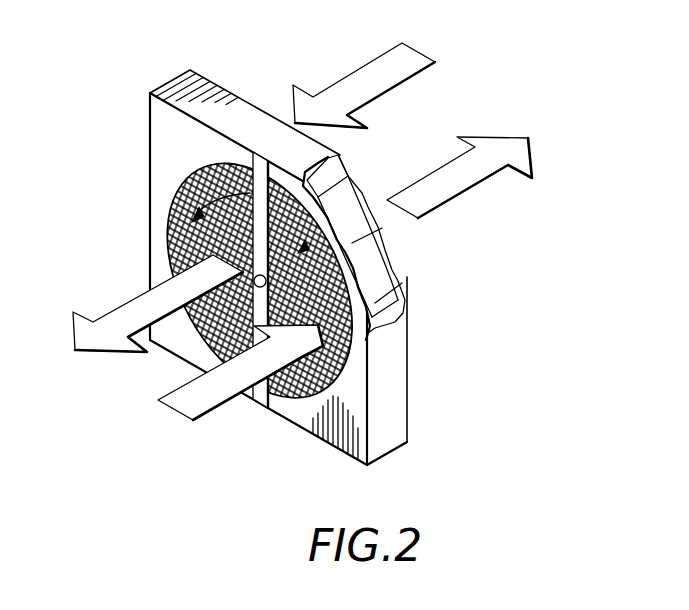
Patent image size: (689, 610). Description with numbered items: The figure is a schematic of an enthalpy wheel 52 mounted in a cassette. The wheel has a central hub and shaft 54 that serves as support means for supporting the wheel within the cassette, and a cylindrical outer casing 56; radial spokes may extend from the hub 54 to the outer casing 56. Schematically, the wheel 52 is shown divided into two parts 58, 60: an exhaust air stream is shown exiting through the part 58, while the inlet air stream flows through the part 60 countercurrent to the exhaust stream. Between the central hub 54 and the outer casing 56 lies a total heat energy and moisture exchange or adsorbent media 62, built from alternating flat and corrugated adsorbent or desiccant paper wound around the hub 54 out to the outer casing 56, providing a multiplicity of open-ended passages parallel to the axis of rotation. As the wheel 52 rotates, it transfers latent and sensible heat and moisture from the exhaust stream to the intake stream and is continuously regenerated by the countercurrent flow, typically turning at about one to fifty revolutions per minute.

The enthalpy wheel 52 is at (347, 376).
The central hub and shaft 54 is at (253, 281).
The cylindrical outer casing 56 is at (376, 244).
The first part of wheel 58 is at (168, 257).
The second part of wheel 60 is at (284, 398).
The adsorbent media 62 is at (352, 347).